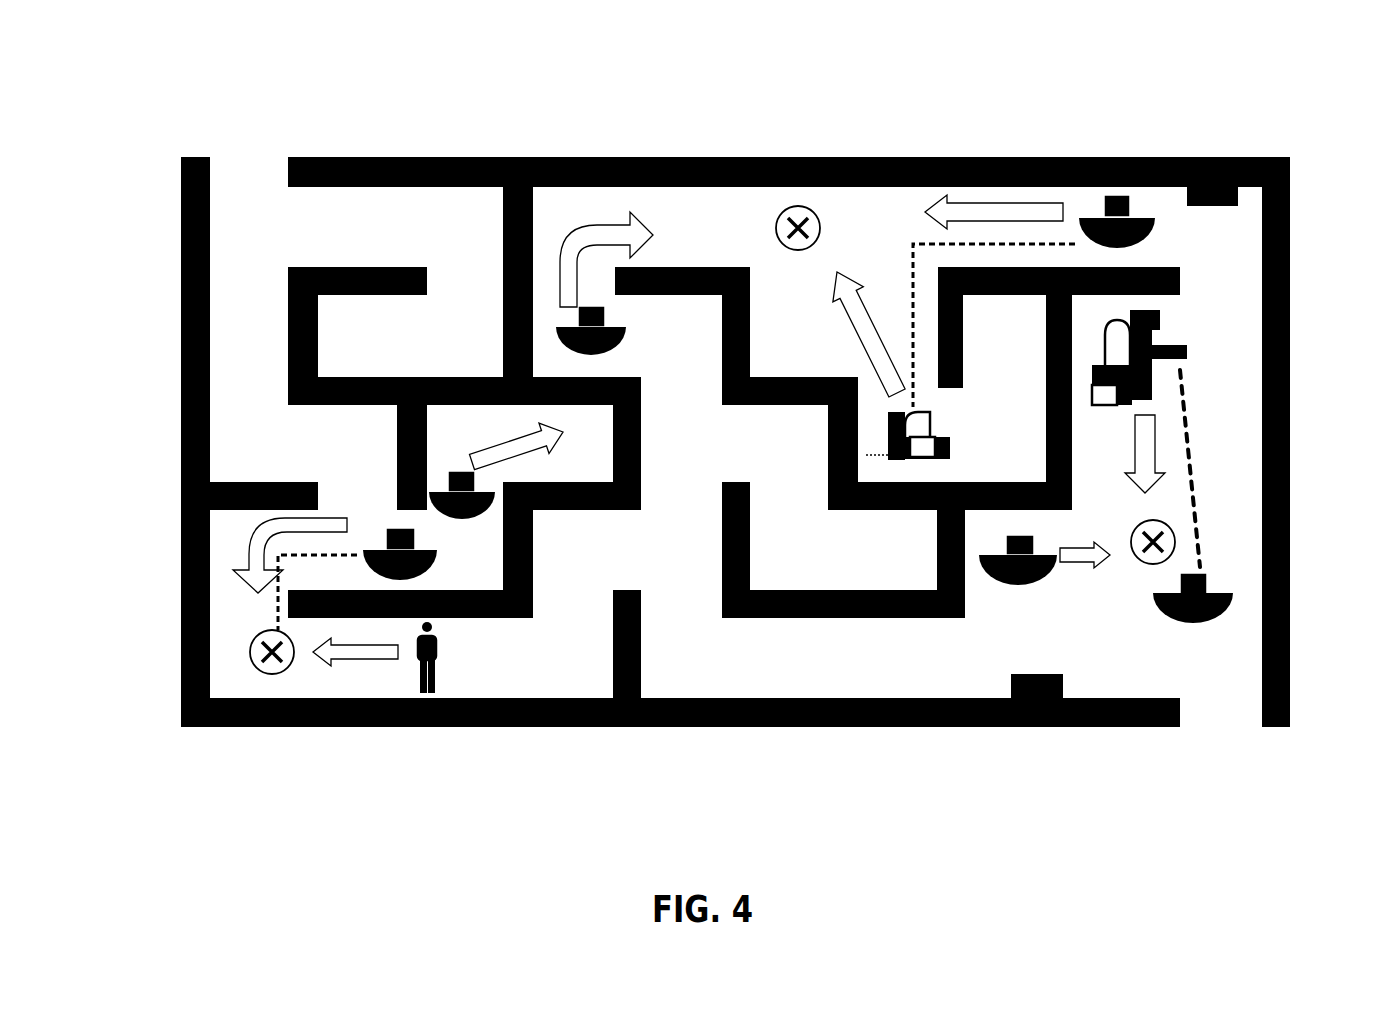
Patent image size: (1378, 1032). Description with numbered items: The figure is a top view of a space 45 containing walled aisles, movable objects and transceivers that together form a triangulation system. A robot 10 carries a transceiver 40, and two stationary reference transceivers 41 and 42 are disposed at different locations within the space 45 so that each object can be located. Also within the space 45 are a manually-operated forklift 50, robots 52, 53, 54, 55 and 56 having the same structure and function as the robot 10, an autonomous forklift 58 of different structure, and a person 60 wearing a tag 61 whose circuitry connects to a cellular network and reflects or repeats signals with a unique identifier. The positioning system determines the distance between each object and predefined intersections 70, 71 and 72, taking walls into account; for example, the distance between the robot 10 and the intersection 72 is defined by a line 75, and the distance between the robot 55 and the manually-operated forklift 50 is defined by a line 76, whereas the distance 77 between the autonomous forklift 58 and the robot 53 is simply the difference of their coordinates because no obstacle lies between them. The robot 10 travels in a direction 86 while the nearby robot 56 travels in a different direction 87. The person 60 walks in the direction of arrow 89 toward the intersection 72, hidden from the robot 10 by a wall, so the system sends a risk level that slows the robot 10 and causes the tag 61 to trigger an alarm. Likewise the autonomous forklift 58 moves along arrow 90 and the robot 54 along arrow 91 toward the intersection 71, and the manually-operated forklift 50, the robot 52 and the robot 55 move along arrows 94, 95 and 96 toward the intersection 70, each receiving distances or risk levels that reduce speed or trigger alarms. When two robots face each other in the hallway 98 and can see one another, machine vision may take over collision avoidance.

The robot 10 is at (410, 576).
The transceiver 40 is at (396, 526).
The reference transceiver 41 is at (1208, 196).
The reference transceiver 42 is at (1037, 675).
The space 45 is at (533, 128).
The manually-operated forklift 50 is at (948, 428).
The robot 52 is at (604, 345).
The robot 53 is at (1193, 612).
The robot 54 is at (1018, 578).
The robot 55 is at (1135, 215).
The robot 56 is at (432, 470).
The autonomous forklift 58 is at (1160, 345).
The person 60 is at (435, 690).
The tag 61 is at (437, 650).
The intersection 70 is at (774, 232).
The intersection 71 is at (1150, 541).
The intersection 72 is at (263, 657).
The line 75 is at (292, 612).
The line 76 is at (912, 268).
The distance 77 is at (1197, 502).
The direction 86 is at (258, 547).
The direction 87 is at (508, 448).
The arrow 89 is at (357, 657).
The arrow 90 is at (1136, 462).
The arrow 91 is at (1083, 555).
The arrow 94 is at (865, 340).
The arrow 95 is at (595, 238).
The arrow 96 is at (1020, 215).
The hallway 98 is at (855, 210).